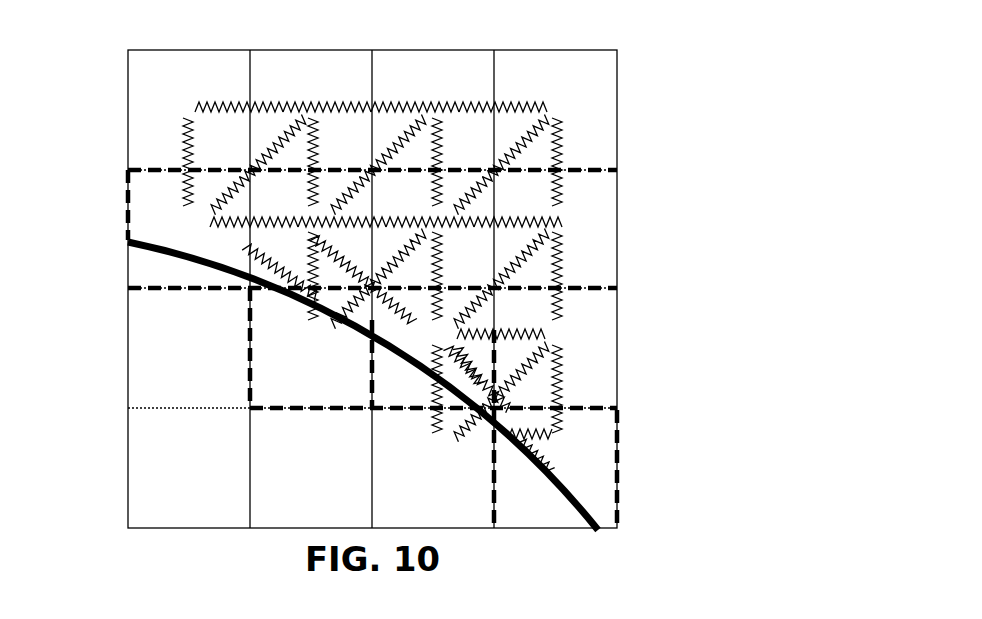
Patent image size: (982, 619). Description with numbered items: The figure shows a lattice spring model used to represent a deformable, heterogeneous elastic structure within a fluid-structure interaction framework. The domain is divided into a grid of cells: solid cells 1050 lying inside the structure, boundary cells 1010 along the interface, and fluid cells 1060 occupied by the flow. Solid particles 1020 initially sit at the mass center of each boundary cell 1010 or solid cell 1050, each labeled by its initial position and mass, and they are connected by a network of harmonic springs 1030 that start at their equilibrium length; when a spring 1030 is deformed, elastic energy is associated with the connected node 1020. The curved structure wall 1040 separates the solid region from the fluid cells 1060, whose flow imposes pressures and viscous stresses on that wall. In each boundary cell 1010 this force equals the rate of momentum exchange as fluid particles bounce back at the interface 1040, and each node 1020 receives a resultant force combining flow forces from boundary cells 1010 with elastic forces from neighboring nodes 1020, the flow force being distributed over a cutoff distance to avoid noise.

The boundary cell 1010 is at (248, 352).
The solid particle 1020 is at (576, 107).
The harmonic spring 1030 is at (578, 378).
The structure wall 1040 is at (566, 498).
The solid cell 1050 is at (130, 95).
The fluid cell 1060 is at (129, 441).